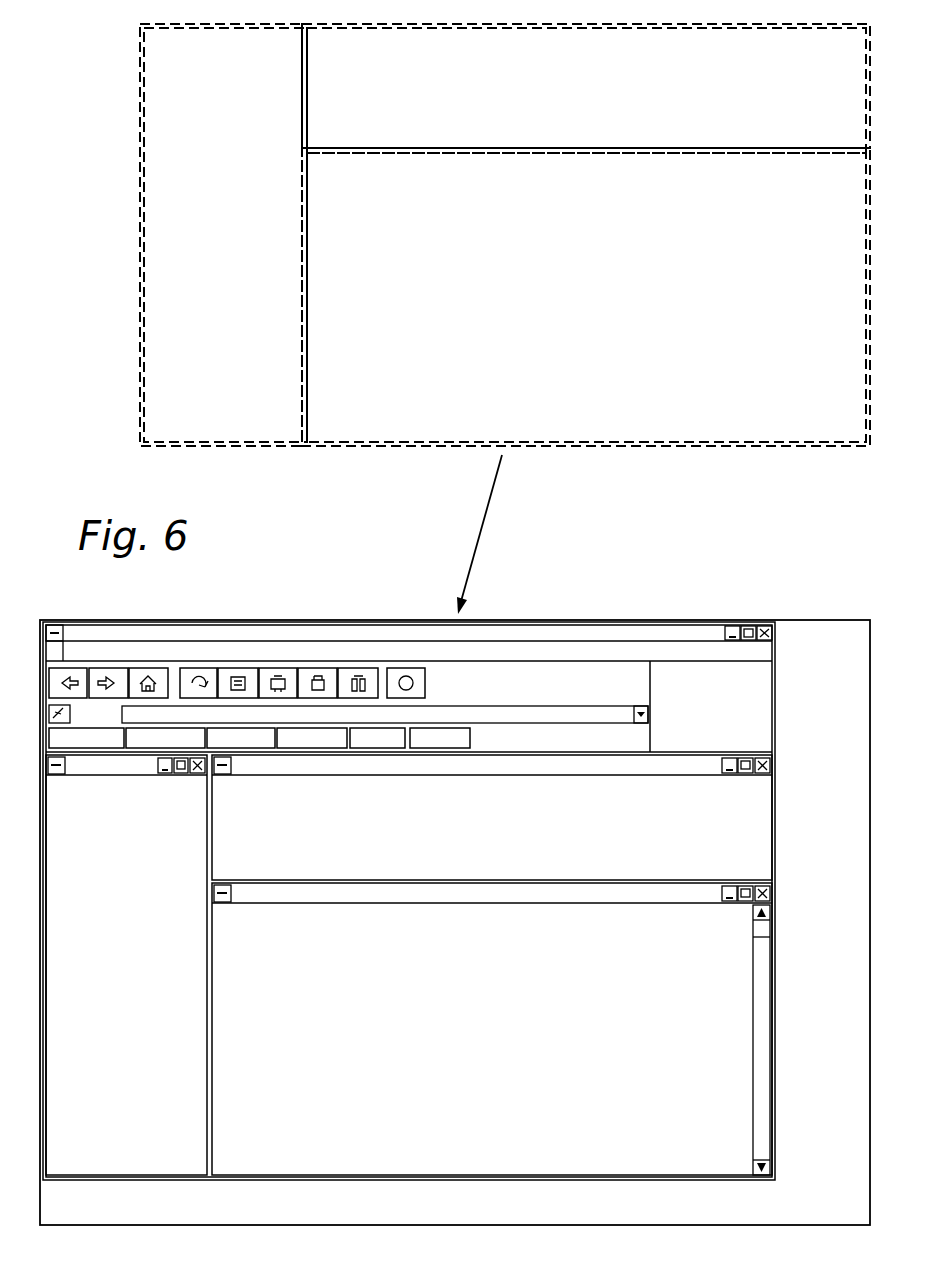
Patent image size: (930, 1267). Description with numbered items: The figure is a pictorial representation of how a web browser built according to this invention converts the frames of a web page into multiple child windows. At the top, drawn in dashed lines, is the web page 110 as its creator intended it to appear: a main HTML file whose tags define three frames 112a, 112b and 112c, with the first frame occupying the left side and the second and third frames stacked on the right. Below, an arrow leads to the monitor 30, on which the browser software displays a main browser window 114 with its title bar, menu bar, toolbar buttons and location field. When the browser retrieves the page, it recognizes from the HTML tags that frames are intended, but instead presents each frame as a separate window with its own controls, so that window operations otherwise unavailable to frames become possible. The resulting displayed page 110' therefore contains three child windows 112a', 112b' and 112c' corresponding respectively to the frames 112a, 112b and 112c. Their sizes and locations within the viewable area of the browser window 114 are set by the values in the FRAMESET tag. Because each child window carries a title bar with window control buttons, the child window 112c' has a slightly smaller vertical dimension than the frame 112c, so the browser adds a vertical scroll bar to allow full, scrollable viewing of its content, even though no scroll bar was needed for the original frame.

The web page 110 is at (461, 251).
The frame 112a is at (230, 259).
The frame 112b is at (586, 112).
The frame 112c is at (586, 321).
The monitor 30 is at (843, 621).
The main browser window 114 is at (790, 713).
The displayed page 110' is at (452, 986).
The child window 112a' is at (137, 986).
The child window 112b' is at (492, 847).
The child window 112c' is at (492, 1050).